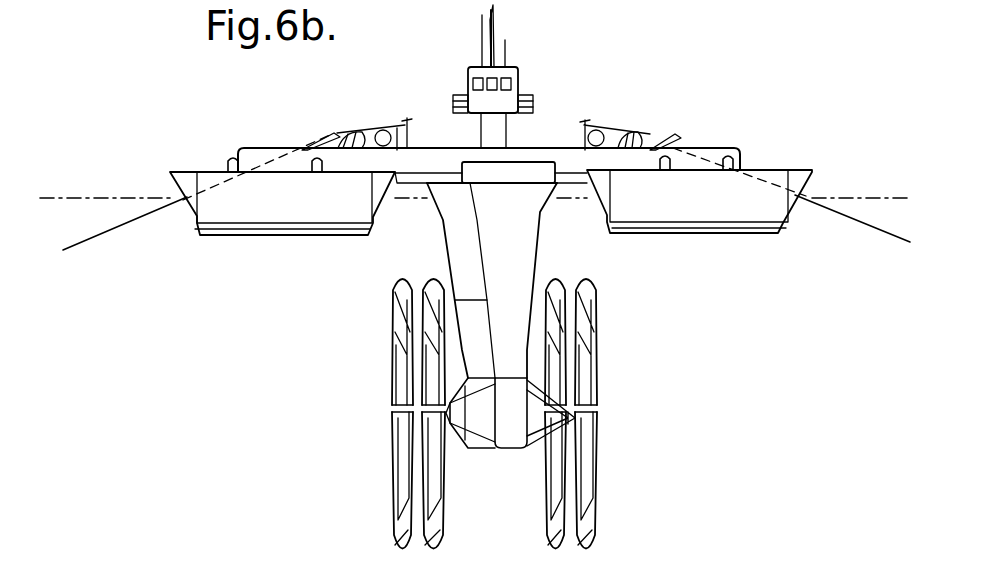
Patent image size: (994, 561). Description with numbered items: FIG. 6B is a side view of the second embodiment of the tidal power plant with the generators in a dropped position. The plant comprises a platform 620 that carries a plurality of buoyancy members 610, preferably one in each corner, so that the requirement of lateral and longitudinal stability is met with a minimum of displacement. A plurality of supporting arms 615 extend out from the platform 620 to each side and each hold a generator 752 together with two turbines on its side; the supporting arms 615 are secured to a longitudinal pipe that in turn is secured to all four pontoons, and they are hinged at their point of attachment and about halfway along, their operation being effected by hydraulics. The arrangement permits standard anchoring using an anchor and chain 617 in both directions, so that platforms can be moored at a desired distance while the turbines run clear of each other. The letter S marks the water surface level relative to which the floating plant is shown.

The platform 620 is at (418, 148).
The buoyancy member 610 is at (293, 236).
The chain 617 is at (124, 221).
The supporting arm 615 is at (520, 267).
The generator 752 is at (514, 453).
The water surface S is at (880, 198).